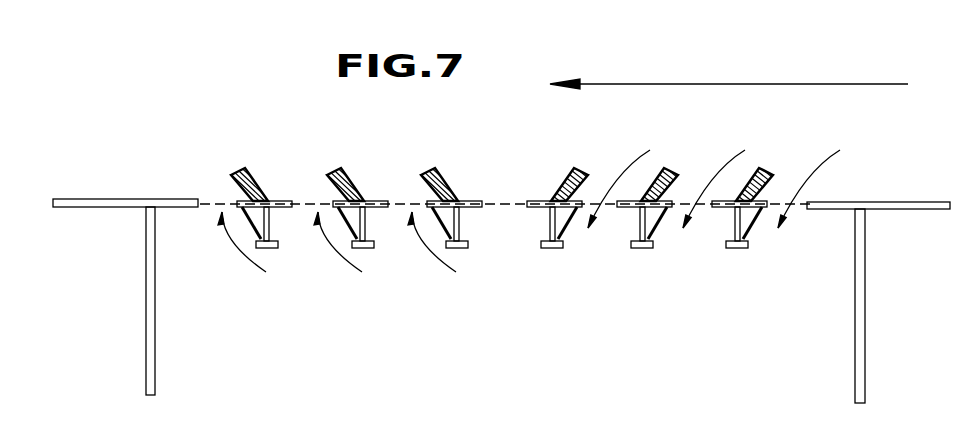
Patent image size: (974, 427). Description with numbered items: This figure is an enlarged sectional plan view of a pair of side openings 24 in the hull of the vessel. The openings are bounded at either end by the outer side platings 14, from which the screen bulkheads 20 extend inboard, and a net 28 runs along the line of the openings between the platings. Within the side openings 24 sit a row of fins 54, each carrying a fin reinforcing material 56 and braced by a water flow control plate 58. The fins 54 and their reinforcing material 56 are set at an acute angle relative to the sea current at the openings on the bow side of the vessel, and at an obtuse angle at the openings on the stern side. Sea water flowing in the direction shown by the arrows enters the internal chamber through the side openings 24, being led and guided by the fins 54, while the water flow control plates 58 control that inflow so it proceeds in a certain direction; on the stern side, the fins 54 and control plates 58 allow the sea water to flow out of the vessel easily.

The outer side plating 14 is at (890, 202).
The screen bulkhead 20 is at (865, 308).
The side opening 24 is at (507, 207).
The net 28 is at (496, 200).
The fin 54 is at (776, 200).
The fin reinforcing material 56 is at (753, 182).
The water flow control plate 58 is at (755, 224).